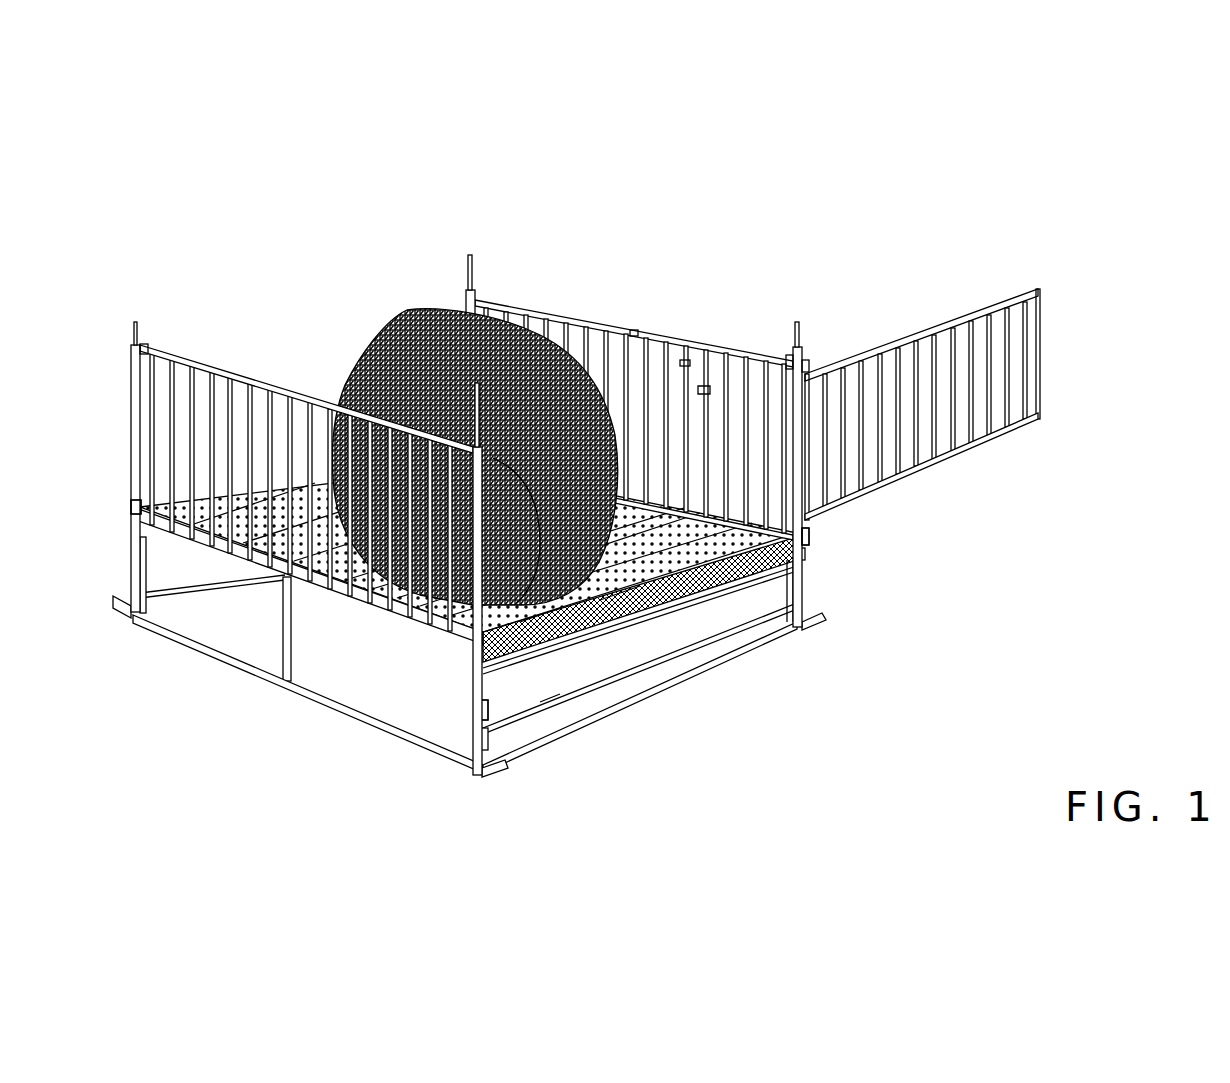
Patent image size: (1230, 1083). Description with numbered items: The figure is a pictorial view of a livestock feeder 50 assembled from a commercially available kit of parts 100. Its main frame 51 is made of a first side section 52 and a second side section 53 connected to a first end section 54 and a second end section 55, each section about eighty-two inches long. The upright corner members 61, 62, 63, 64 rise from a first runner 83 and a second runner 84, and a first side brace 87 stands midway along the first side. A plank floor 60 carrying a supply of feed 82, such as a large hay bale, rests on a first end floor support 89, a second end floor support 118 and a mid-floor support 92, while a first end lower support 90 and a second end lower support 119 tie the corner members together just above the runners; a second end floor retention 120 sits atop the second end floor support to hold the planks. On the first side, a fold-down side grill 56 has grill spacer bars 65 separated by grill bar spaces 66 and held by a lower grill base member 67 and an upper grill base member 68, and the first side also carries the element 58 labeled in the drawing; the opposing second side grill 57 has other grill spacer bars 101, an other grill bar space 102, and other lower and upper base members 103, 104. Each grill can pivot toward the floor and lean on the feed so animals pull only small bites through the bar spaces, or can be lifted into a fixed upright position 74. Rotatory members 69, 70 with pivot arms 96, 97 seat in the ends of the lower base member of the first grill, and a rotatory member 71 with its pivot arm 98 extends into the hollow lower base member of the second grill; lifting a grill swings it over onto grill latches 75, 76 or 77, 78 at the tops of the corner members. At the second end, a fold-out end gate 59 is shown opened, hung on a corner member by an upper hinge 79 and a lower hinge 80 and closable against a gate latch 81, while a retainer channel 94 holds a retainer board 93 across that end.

The kit of parts 100 is at (752, 135).
The livestock feeder 50 is at (660, 128).
The main frame 51 is at (636, 214).
The first side section 52 is at (268, 782).
The second side section 53 is at (968, 544).
The first end section 54 is at (240, 233).
The second end section 55 is at (760, 773).
The first fold-down side grill 56 is at (287, 383).
The second fold-down side grill 57 is at (583, 312).
The side wall frame 58 is at (263, 328).
The second fold-out end gate 59 is at (931, 323).
The floor 60 is at (585, 590).
The corner member 61 is at (147, 348).
The corner member 62 is at (488, 716).
The corner member 63 is at (799, 370).
The corner member 64 is at (488, 292).
The grill spacer bar 65 is at (365, 565).
The grill bar space 66 is at (452, 565).
The lower grill base member 67 is at (417, 575).
The upper grill base member 68 is at (205, 357).
The rotatory member 69 is at (142, 510).
The pivot arm 96 is at (136, 507).
The rotatory member 70 is at (466, 712).
The pivot arm 97 is at (484, 710).
The rotatory member 71 is at (808, 537).
The pivot arm 98 is at (805, 536).
The fixed upright position 74 is at (308, 378).
The grill latch 75 is at (152, 348).
The grill latch 76 is at (545, 545).
The grill latch 77 is at (812, 362).
The grill latch 78 is at (463, 292).
The upper hinge 79 is at (793, 360).
The lower hinge 80 is at (838, 508).
The gate latch 81 is at (434, 565).
The supply of feed 82 is at (572, 618).
The first runner 83 is at (178, 637).
The second runner 84 is at (707, 612).
The first side brace 87 is at (284, 650).
The first end floor support 89 is at (147, 572).
The first end lower support 90 is at (163, 596).
The mid-floor support 92 is at (277, 655).
The retainer board 93 is at (637, 610).
The retainer channel 94 is at (472, 722).
The other grill spacer bar 101 is at (683, 360).
The other grill bar space 102 is at (703, 387).
The other lower base member 103 is at (707, 607).
The other upper base member 104 is at (637, 327).
The second end floor support 118 is at (667, 612).
The second end lower support 119 is at (597, 704).
The second end floor retention 120 is at (548, 712).